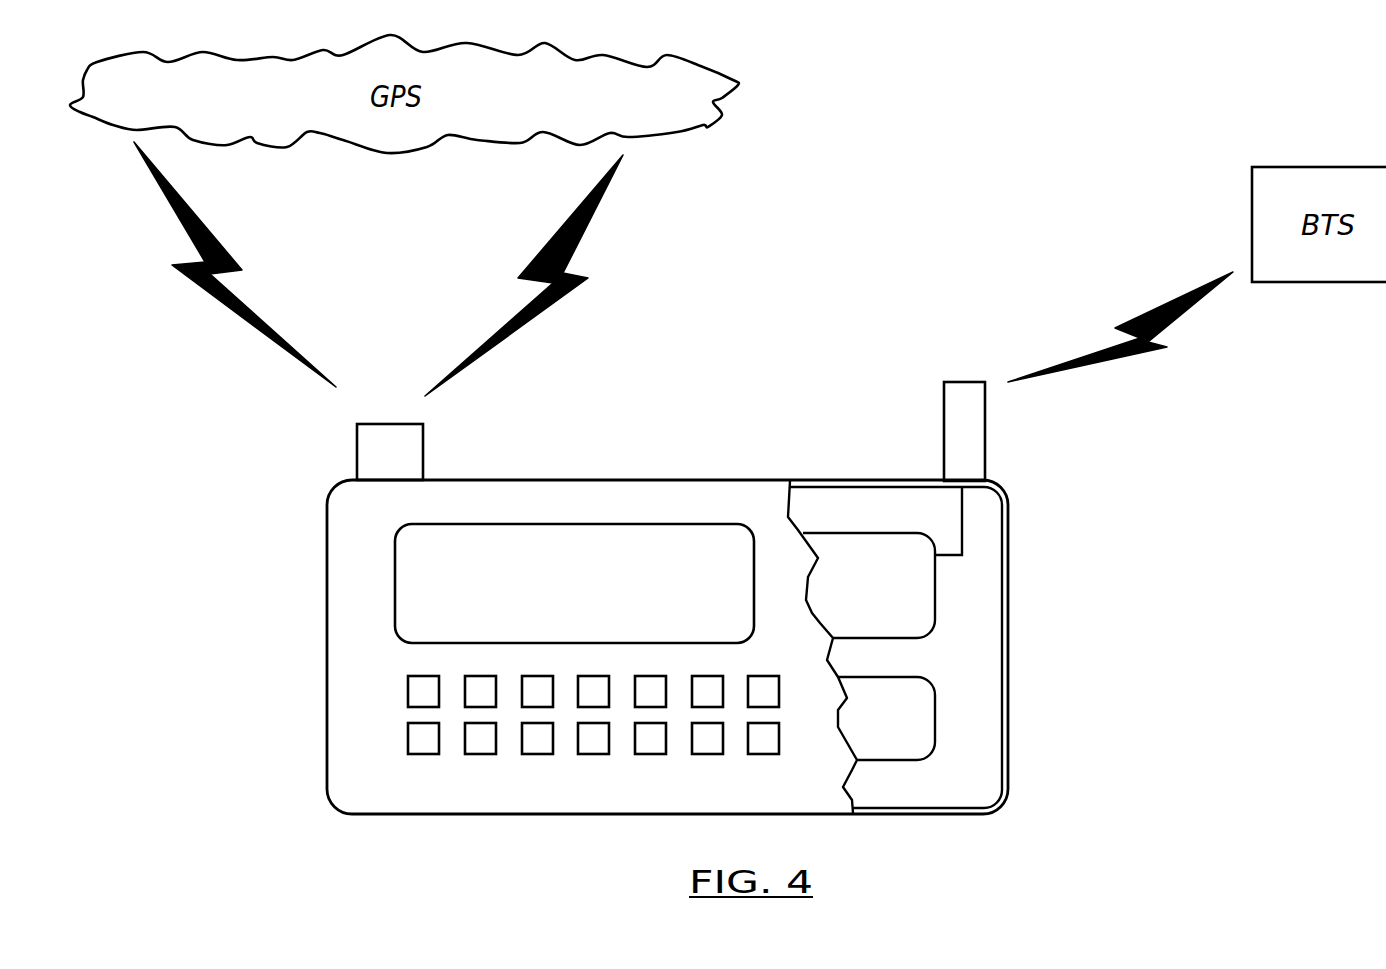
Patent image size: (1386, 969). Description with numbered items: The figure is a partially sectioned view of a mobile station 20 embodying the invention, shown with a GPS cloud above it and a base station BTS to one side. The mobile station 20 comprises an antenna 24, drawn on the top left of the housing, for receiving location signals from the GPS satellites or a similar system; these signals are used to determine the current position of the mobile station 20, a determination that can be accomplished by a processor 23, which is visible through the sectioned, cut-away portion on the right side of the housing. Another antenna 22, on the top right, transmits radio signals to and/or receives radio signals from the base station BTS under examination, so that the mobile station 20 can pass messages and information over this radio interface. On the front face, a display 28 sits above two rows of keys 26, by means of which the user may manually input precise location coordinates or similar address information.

The mobile station 20 is at (977, 782).
The antenna 22 is at (985, 427).
The processor 23 is at (902, 727).
The antenna 24 is at (370, 452).
The keys 26 is at (417, 687).
The display 28 is at (415, 573).